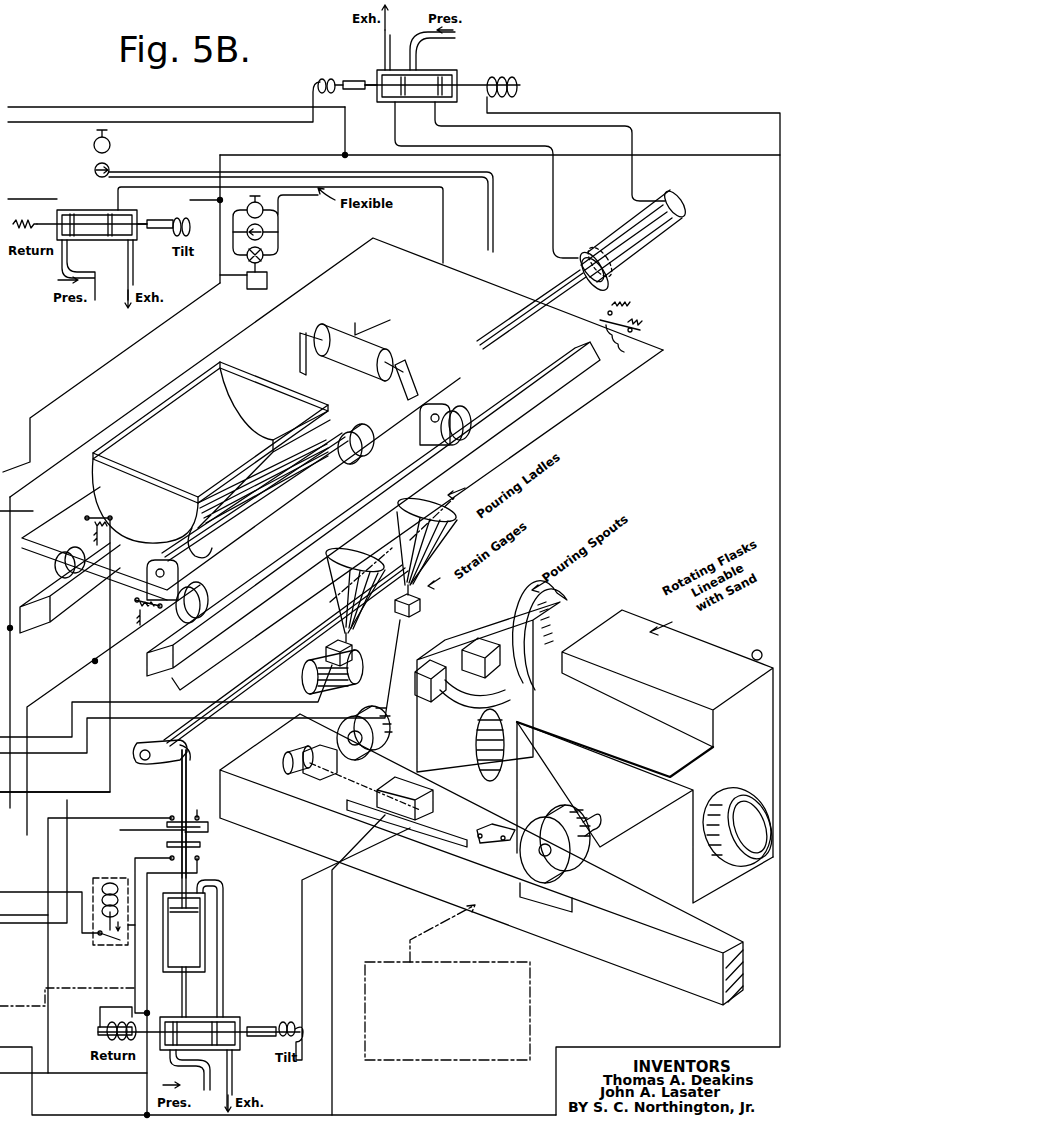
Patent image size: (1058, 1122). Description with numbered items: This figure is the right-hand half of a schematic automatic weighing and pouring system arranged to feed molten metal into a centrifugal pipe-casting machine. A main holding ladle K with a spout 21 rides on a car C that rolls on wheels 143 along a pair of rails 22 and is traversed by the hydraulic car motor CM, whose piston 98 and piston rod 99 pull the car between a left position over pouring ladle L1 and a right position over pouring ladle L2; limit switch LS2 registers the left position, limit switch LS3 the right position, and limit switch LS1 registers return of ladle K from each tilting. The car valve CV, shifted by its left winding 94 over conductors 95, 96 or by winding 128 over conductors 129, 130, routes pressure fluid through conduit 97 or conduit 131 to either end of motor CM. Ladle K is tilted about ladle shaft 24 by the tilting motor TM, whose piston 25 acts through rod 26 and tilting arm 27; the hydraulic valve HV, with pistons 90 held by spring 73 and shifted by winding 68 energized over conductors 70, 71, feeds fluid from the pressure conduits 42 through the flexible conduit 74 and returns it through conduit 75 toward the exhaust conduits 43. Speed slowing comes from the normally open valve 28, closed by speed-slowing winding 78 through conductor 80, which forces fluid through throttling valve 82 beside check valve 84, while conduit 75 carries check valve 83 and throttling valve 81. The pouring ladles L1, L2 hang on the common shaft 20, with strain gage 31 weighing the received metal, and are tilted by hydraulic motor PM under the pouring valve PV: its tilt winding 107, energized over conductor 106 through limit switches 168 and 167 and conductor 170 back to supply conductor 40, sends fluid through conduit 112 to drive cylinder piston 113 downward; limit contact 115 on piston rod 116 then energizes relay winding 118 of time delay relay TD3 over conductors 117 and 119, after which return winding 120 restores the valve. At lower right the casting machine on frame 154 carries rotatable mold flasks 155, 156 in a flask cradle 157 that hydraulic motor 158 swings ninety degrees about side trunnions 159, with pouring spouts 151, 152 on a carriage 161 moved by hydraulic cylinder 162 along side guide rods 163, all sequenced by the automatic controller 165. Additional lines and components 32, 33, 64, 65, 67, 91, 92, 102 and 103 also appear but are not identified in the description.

The shaft 20 is at (268, 668).
The spout 21 is at (350, 470).
The rails 22 is at (578, 352).
The ladle shaft 24 is at (268, 505).
The piston 25 is at (355, 352).
The rod 26 is at (398, 365).
The tilting arm 27 is at (412, 390).
The valve 28 is at (264, 265).
The strain gage 31 is at (350, 648).
The strain gage 32 is at (425, 605).
The signal lines 33 is at (32, 738).
The supply conductor 40 is at (780, 372).
The pressure conduits 42 is at (88, 290).
The exhaust conduits 43 is at (135, 268).
The line 64 is at (10, 916).
The switch lever 65 is at (190, 817).
The line 67 is at (8, 927).
The winding 68 is at (179, 219).
The conductor 70 is at (12, 203).
The conductor 71 is at (272, 158).
The spring 73 is at (18, 224).
The conduit 74 is at (440, 228).
The return conduit 75 is at (205, 172).
The speed-slowing winding 78 is at (256, 290).
The conductor 80 is at (33, 432).
The throttling valve 81 is at (112, 138).
The throttling valve 82 is at (264, 214).
The check valve 83 is at (110, 162).
The check valve 84 is at (264, 238).
The pistons 90 is at (112, 212).
The line 91 is at (15, 513).
The line 92 is at (35, 803).
The left winding 94 is at (330, 80).
The conductor 95 is at (20, 122).
The conductor 96 is at (350, 135).
The conduit 97 is at (556, 186).
The motor piston 98 is at (600, 248).
The piston rod 99 is at (580, 292).
The frame line 102 is at (345, 263).
The frame line 103 is at (622, 378).
The conductor 106 is at (10, 1006).
The tilt winding 107 is at (272, 1024).
The conduit 112 is at (224, 965).
The cylinder piston 113 is at (183, 912).
The limit contact 115 is at (200, 845).
The piston rod 116 is at (180, 798).
The conductor 117 is at (12, 893).
The relay winding 118 is at (108, 880).
The conductor 119 is at (147, 1100).
The return winding 120 is at (100, 1040).
The winding 128 is at (502, 78).
The conductor 129 is at (25, 107).
The conductor 130 is at (700, 113).
The conduit 131 is at (633, 142).
The wheels 143 is at (55, 575).
The pouring spout 151 is at (420, 655).
The pouring spout 152 is at (478, 605).
The frame or base 154 is at (238, 768).
The rotatable mold flask 155 is at (482, 768).
The rotatable mold flask 156 is at (545, 690).
The flask cradle 157 is at (607, 758).
The hydraulic motor 158 is at (547, 818).
The side trunnions 159 is at (546, 860).
The carriage 161 is at (447, 670).
The hydraulic cylinder 162 is at (318, 693).
The side guide rods 163 is at (296, 752).
The automatic controller 165 is at (425, 1062).
The first limit switch 167 is at (470, 832).
The second limit switch 168 is at (352, 810).
The conductor 170 is at (333, 920).
The hydraulic valve HV is at (66, 204).
The car valve CV is at (463, 79).
The traversing motor CM is at (665, 238).
The limit switch LS1 is at (88, 528).
The limit switch LS2 is at (137, 588).
The limit switch LS3 is at (573, 318).
The main holding ladle K is at (165, 418).
The car C is at (75, 512).
The tilting motor TM is at (350, 382).
The pouring ladle L1 is at (358, 585).
The pouring ladle L2 is at (430, 532).
The time delay relay TD3 is at (102, 947).
The hydraulic motor PM is at (205, 930).
The pouring valve PV is at (200, 1015).